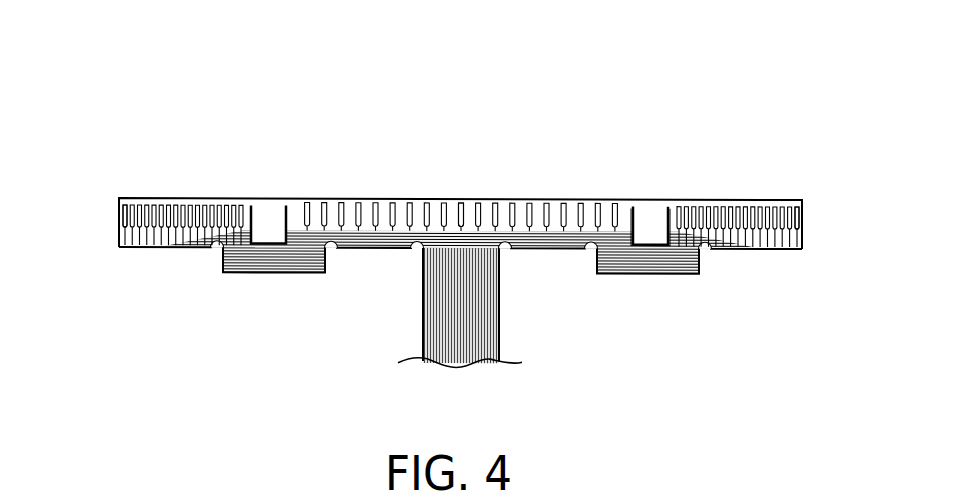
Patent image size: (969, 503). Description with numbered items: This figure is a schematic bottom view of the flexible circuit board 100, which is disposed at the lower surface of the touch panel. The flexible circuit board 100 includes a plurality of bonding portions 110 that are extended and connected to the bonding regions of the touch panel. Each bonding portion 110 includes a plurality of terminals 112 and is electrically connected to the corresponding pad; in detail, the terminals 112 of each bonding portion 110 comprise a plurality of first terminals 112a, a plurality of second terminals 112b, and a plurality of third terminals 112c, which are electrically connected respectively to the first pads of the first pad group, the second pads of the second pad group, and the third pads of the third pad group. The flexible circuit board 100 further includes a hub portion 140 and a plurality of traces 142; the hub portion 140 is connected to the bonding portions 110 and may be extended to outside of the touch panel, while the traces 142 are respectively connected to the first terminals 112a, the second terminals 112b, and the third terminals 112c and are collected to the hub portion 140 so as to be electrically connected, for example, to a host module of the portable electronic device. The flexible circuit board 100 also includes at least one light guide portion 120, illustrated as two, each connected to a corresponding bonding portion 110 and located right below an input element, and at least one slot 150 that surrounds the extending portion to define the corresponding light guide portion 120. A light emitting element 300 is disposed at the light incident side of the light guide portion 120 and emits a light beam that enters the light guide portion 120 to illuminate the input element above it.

The flexible circuit board 100 is at (818, 422).
The bonding portion 110 is at (200, 198).
The terminal 112 is at (466, 175).
The first terminal 112a is at (125, 217).
The second terminal 112b is at (797, 220).
The third terminal 112c is at (460, 197).
The light guide portion 120 is at (275, 204).
The hub portion 140 is at (423, 303).
The trace 142 is at (285, 262).
The slot 150 is at (630, 217).
The light emitting element 300 is at (799, 82).